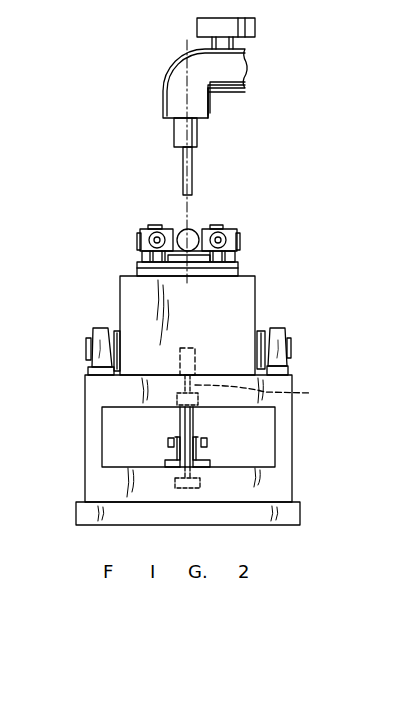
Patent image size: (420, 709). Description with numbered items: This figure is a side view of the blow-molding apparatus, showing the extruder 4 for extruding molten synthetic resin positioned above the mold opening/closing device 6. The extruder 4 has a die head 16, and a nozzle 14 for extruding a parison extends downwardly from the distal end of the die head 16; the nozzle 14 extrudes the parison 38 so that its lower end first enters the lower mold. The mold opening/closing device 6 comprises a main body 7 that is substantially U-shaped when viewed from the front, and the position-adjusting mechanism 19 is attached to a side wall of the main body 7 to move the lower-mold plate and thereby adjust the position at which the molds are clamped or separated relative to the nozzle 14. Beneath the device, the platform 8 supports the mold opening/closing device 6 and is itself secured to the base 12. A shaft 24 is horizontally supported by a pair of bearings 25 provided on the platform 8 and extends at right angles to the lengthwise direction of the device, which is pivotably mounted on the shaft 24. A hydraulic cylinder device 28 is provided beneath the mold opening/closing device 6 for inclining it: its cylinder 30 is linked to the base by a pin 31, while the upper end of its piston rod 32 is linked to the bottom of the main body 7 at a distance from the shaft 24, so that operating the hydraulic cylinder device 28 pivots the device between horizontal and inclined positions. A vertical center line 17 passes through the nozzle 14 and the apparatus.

The extruder 4 is at (257, 62).
The vertical axis 17 is at (185, 50).
The die head 16 is at (203, 103).
The nozzle 14 is at (198, 137).
The parison 38 is at (192, 175).
The mold opening/closing device 6 is at (118, 248).
The position-adjusting mechanism 19 is at (192, 238).
The main body 7 is at (243, 280).
The bearings 25 is at (102, 333).
The shaft 24 is at (265, 330).
The platform 8 is at (90, 402).
The hydraulic cylinder device 28 is at (170, 428).
The cylinder 30 is at (194, 423).
The pin 31 is at (208, 445).
The piston rod 32 is at (254, 375).
The base 12 is at (88, 512).